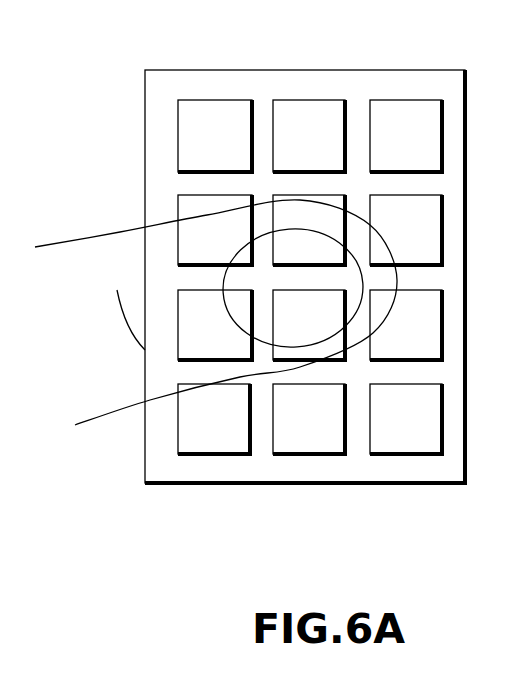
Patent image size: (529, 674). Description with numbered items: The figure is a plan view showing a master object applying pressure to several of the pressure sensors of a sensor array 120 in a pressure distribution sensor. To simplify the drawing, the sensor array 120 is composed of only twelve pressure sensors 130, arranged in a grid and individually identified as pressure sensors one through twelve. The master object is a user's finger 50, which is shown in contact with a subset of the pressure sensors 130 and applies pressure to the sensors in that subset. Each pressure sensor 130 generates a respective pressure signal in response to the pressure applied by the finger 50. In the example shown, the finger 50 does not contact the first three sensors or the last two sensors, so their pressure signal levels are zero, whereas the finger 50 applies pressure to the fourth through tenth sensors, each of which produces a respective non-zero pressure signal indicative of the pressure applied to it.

The sensor array 120 is at (284, 492).
The pressure sensors 130 is at (215, 100).
The user's finger 50 is at (58, 240).